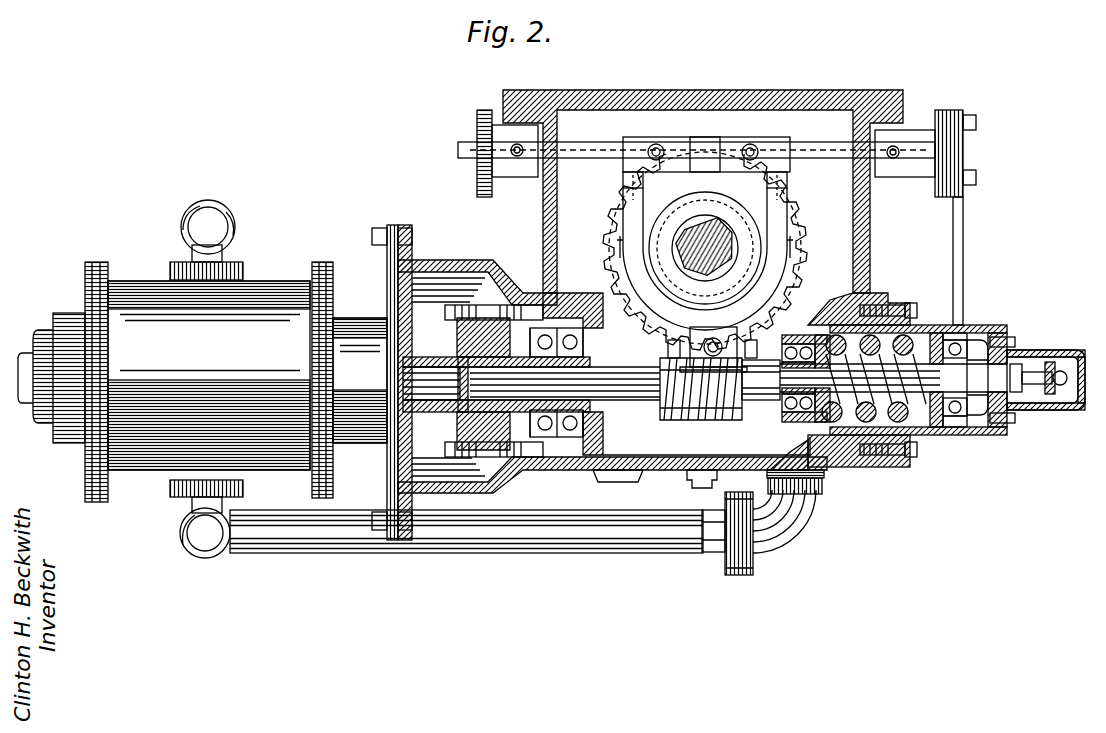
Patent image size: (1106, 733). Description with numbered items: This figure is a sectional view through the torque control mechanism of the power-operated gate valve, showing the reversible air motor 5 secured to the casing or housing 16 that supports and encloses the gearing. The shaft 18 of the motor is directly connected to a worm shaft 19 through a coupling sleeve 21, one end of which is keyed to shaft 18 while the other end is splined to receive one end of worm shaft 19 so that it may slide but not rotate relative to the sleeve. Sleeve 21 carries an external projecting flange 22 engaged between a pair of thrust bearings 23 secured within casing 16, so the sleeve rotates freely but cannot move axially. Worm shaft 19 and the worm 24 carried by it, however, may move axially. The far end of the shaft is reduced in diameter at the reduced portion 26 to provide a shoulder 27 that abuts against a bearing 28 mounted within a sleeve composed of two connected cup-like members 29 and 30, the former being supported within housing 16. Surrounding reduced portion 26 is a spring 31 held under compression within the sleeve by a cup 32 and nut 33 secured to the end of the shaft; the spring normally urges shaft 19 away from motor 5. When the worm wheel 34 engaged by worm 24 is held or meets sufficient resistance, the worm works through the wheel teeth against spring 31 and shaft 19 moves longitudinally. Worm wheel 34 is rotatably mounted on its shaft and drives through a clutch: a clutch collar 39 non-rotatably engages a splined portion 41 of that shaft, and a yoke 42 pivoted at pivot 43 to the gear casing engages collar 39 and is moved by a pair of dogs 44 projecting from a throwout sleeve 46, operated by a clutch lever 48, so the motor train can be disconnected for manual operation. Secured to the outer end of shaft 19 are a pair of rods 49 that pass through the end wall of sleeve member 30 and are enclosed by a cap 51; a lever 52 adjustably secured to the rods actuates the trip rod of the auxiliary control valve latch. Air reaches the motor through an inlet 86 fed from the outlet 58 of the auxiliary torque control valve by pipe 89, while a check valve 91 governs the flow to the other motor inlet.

The motor 5 is at (145, 280).
The casing or housing 16 is at (447, 262).
The shaft 18 is at (430, 410).
The worm shaft 19 is at (595, 366).
The coupling sleeve 21 is at (600, 406).
The external projecting flange 22 is at (562, 334).
The thrust bearings 23 is at (545, 326).
The worm 24 is at (700, 418).
The reduced portion of the worm shaft 26 is at (905, 418).
The shoulder 27 is at (760, 404).
The bearing 28 is at (792, 340).
The cup-like member 29 is at (812, 312).
The cup-like member 30 is at (990, 438).
The spring 31 is at (862, 462).
The cup 32 is at (965, 334).
The nut 33 is at (982, 362).
The worm wheel 34 is at (792, 232).
The clutch collar 39 is at (752, 222).
The splined portion of shaft 41 is at (712, 232).
The yoke 42 is at (762, 240).
The pivot 43 is at (716, 340).
The dogs 44 is at (625, 180).
The throwout sleeve 46 is at (735, 137).
The clutch lever 48 is at (965, 242).
The rods 49 is at (1030, 392).
The cap 51 is at (1080, 411).
The lever 52 is at (1052, 362).
The outlet 58 is at (815, 505).
The inlet 86 is at (190, 537).
The pipe 89 is at (300, 556).
The check valve 91 is at (232, 224).